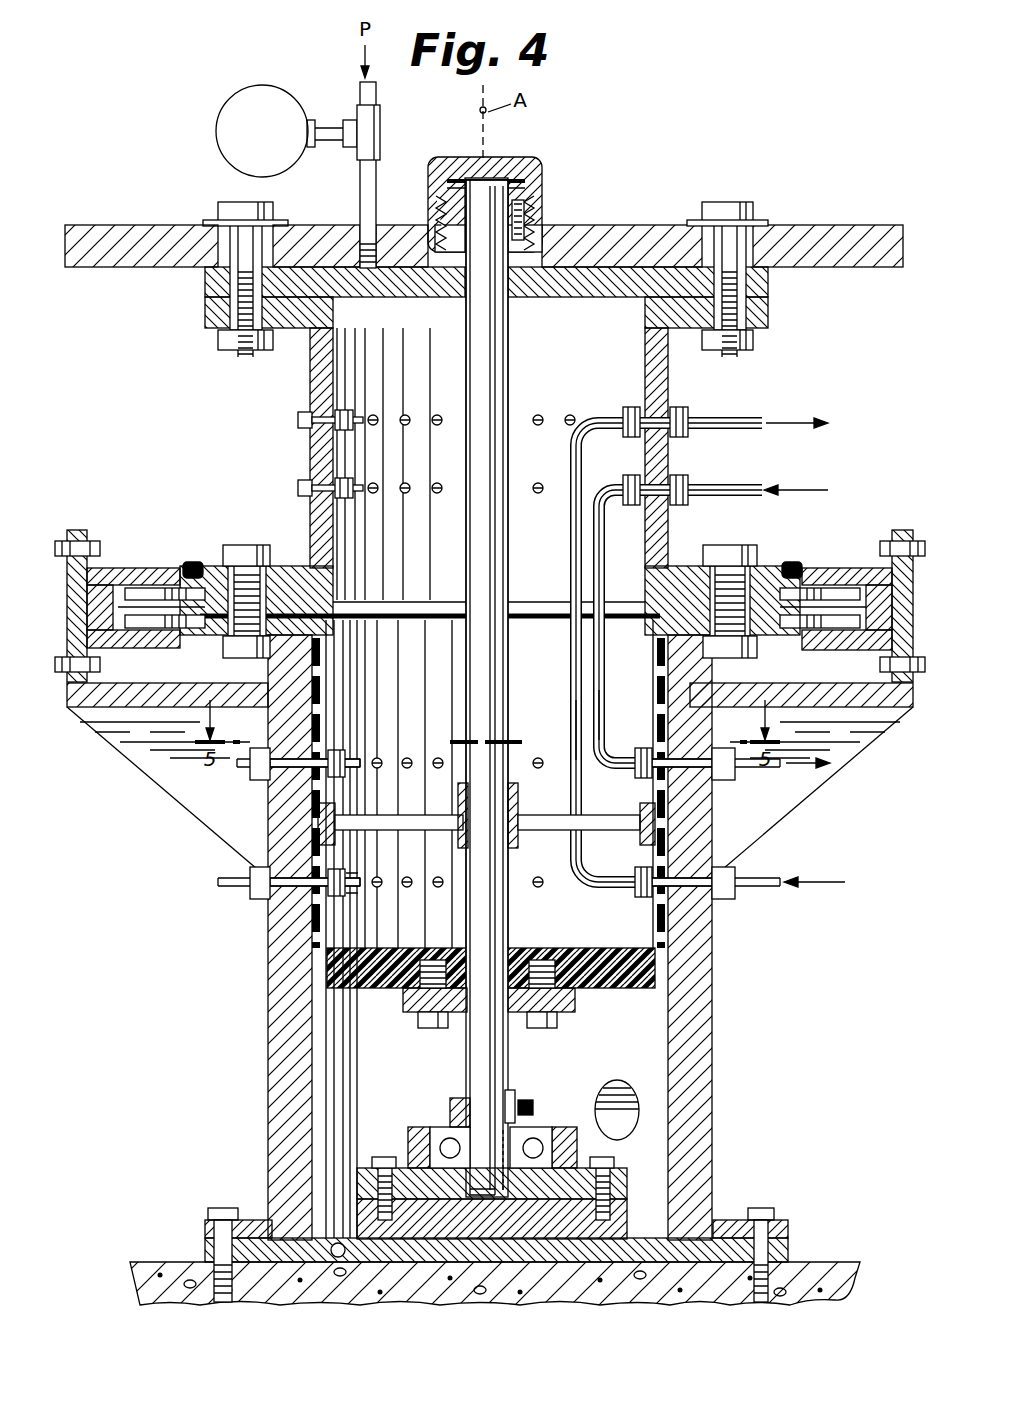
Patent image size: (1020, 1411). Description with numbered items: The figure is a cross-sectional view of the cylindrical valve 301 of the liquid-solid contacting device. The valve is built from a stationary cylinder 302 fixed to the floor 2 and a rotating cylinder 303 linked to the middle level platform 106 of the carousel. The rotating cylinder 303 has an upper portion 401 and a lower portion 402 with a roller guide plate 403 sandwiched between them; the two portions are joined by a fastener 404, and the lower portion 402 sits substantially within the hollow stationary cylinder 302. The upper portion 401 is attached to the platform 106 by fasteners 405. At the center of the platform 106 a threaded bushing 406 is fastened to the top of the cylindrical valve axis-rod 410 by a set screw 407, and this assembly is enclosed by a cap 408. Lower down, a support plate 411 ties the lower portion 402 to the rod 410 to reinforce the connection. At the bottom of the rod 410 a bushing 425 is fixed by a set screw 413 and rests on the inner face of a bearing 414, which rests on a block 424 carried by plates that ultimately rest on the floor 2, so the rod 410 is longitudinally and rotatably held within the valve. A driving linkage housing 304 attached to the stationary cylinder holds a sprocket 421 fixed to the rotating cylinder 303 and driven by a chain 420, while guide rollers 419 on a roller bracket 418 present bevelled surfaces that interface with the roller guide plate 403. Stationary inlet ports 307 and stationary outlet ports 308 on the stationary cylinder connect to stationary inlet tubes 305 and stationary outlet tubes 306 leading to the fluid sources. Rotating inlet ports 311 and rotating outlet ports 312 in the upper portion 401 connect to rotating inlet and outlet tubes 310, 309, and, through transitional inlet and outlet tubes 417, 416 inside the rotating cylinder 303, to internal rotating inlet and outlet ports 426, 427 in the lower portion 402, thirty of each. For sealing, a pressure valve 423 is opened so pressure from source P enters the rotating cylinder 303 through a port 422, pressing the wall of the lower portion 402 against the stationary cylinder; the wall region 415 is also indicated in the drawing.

The floor 2 is at (802, 1306).
The middle level platform 106 is at (832, 225).
The cylindrical valve 301 is at (260, 1083).
The stationary cylinder 302 is at (714, 1162).
The rotating cylinder 303 is at (669, 397).
The driving linkage housing 304 is at (855, 760).
The stationary inlet tube 305 is at (218, 882).
The stationary outlet tube 306 is at (237, 764).
The stationary inlet port 307 is at (348, 893).
The stationary outlet port 308 is at (265, 806).
The rotating outlet tube 309 is at (740, 413).
The rotating inlet tube 310 is at (740, 483).
The rotating inlet port 311 is at (437, 427).
The rotating outlet port 312 is at (437, 495).
The upper portion 401 is at (669, 531).
The lower portion 402 is at (672, 856).
The roller guide plate 403 is at (780, 596).
The fastener 404 is at (735, 546).
The fasteners 405 is at (722, 203).
The threaded bushing 406 is at (543, 233).
The set screw 407 is at (532, 184).
The cap 408 is at (522, 157).
The cylindrical valve axis-rod 410 is at (509, 347).
The support plate 411 is at (362, 838).
The set screw 413 is at (535, 1108).
The bearing 414 is at (617, 1100).
The housing wall 415 is at (712, 1126).
The transitional outlet tube 416 is at (606, 684).
The transitional inlet tube 417 is at (571, 680).
The roller bracket 418 is at (120, 565).
The guide rollers 419 is at (147, 588).
The chain 420 is at (190, 560).
The sprocket 421 is at (212, 545).
The port 422 is at (352, 330).
The pressure valve 423 is at (246, 100).
The block 424 is at (628, 1193).
The bushing 425 is at (517, 1095).
The internal rotating inlet port 426 is at (318, 912).
The internal rotating outlet port 427 is at (438, 757).